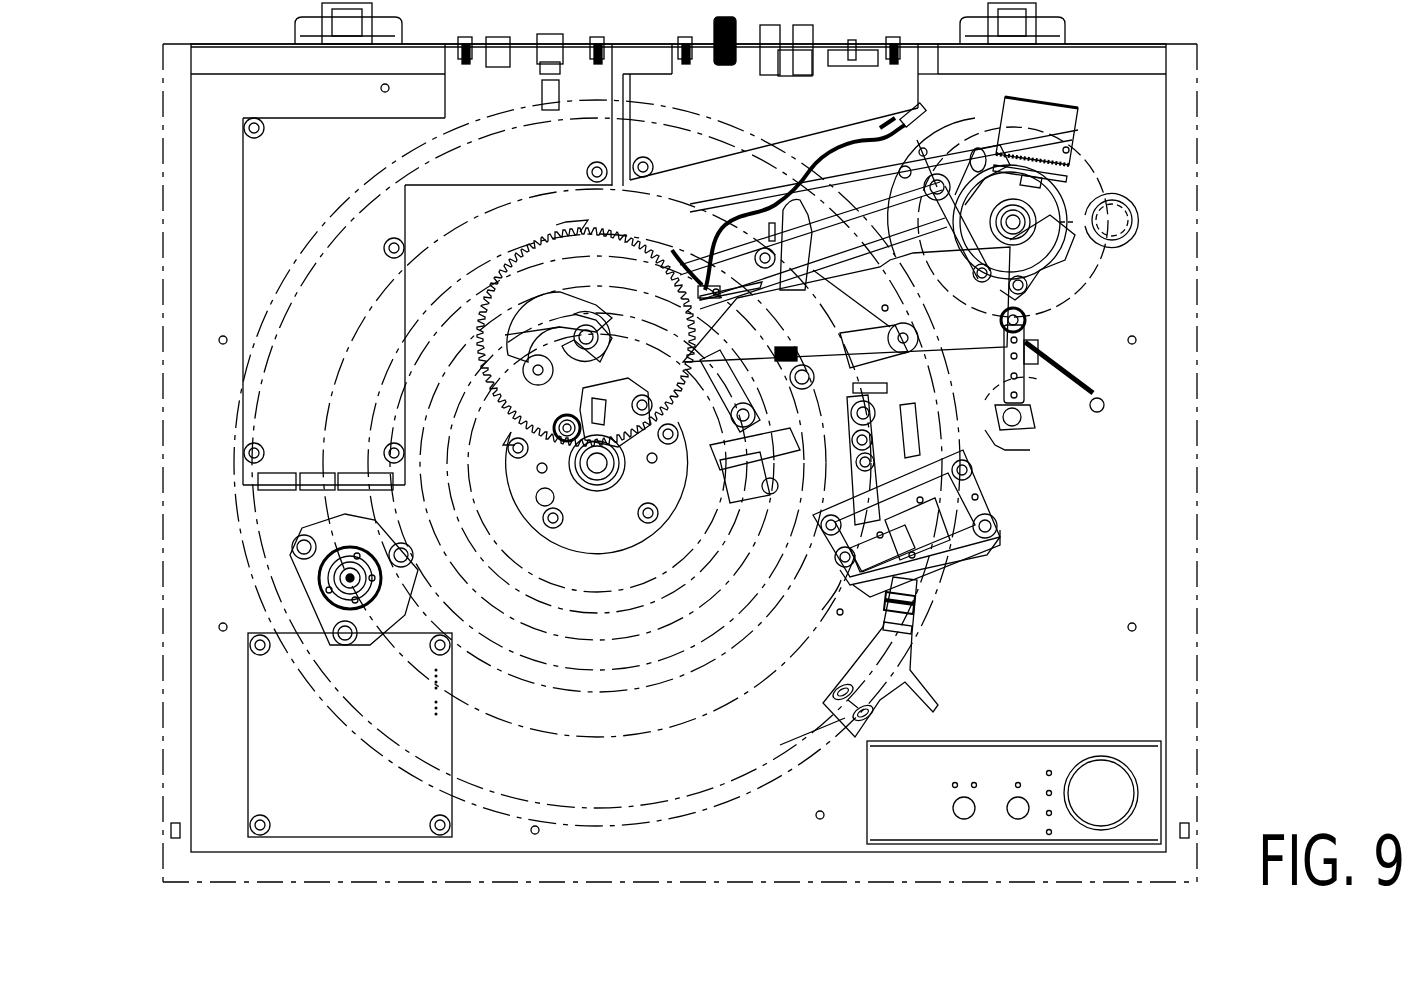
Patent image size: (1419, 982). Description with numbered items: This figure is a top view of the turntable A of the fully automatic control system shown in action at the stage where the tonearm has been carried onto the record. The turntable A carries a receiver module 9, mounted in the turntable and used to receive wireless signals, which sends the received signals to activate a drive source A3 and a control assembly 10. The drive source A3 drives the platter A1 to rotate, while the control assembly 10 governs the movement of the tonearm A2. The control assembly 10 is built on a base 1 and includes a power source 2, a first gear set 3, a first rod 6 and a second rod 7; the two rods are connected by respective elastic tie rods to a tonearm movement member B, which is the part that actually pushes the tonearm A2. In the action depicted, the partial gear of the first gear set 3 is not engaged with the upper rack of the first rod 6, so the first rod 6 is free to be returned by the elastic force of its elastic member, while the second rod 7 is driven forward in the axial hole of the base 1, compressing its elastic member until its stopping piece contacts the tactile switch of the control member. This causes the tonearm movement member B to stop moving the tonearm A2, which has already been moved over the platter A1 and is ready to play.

The turntable A is at (1199, 355).
The platter A1 is at (845, 763).
The tonearm A2 is at (880, 660).
The drive source A3 is at (290, 556).
The tonearm movement member B is at (975, 118).
The base 1 is at (978, 560).
The power source 2 is at (870, 570).
The first gear set 3 is at (975, 497).
The first rod 6 is at (822, 610).
The second rod 7 is at (1045, 414).
The receiver module 9 is at (325, 787).
The control assembly 10 is at (1030, 545).